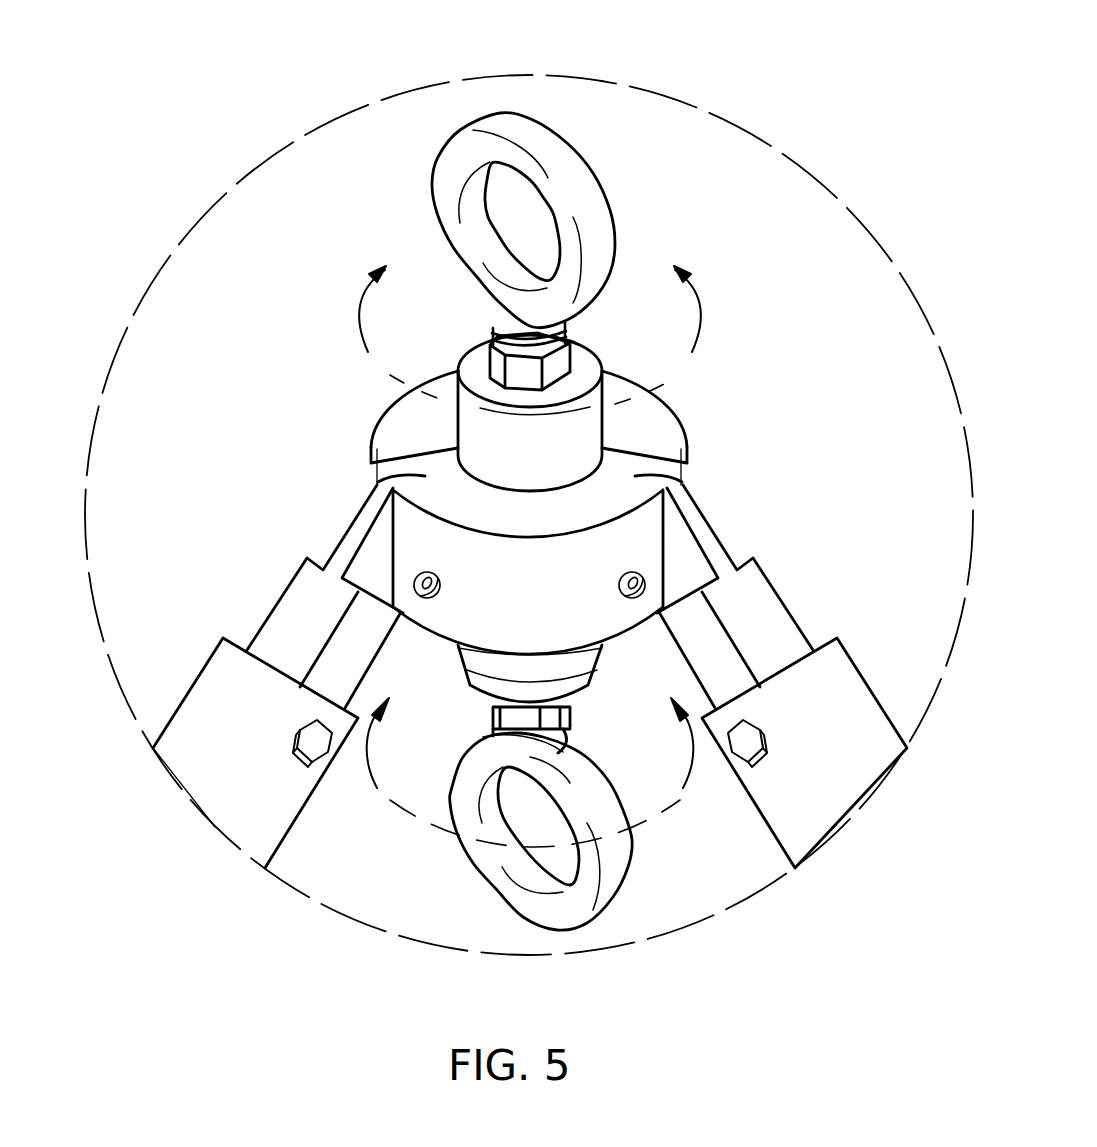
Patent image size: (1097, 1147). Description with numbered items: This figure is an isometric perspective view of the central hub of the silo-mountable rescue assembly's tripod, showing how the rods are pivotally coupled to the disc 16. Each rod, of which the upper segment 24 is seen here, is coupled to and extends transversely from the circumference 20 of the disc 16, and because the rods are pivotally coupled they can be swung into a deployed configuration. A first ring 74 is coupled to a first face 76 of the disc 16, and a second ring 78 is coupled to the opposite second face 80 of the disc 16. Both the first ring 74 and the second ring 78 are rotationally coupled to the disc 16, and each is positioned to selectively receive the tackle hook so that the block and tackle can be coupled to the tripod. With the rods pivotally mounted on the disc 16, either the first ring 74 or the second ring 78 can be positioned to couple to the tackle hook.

The disc 16 is at (495, 548).
The circumference 20 is at (685, 443).
The upper segment 24 is at (200, 768).
The first ring 74 is at (615, 875).
The first face 76 is at (438, 642).
The second ring 78 is at (535, 146).
The second face 80 is at (653, 422).